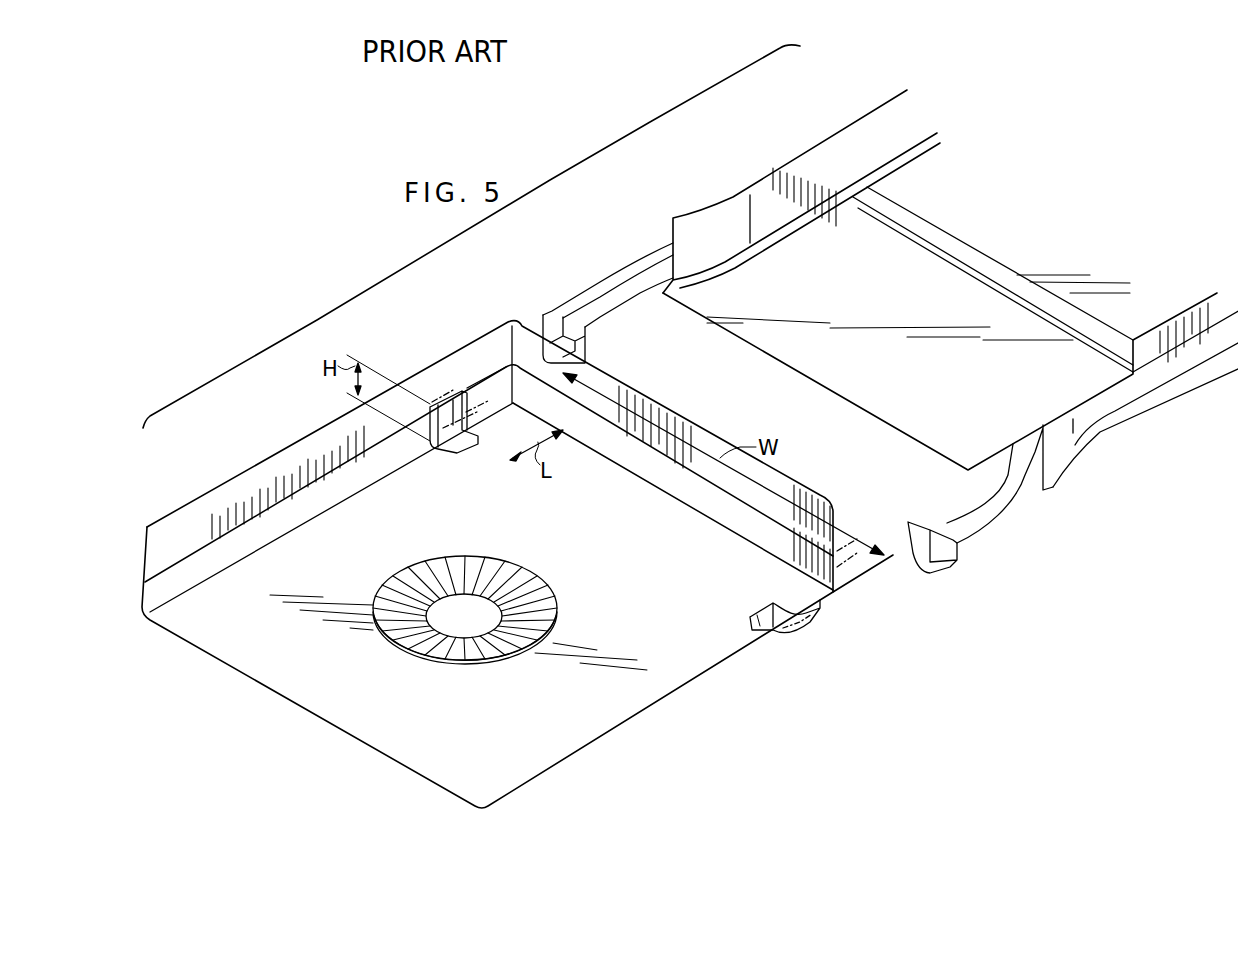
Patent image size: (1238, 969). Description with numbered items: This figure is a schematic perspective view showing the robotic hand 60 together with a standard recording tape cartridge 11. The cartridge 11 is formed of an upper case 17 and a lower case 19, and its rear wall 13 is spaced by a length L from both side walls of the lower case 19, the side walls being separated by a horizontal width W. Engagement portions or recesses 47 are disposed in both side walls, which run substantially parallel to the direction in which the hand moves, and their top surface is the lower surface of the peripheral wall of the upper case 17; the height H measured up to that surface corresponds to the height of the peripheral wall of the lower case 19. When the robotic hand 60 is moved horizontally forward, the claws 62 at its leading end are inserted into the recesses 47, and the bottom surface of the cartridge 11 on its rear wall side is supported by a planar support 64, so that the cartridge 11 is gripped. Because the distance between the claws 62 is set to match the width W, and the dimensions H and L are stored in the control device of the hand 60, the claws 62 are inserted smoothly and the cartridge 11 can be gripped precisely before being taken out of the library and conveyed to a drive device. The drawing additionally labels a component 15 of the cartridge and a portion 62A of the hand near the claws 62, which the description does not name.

The recording tape cartridge 11 is at (462, 336).
The rear wall 13 is at (647, 457).
The spindle motor flange 15 is at (512, 648).
The upper case 17 is at (288, 465).
The lower case 19 is at (655, 678).
The recesses 47 is at (470, 453).
The robotic hand 60 is at (774, 166).
The claws 62 is at (585, 347).
The arm portions 62A is at (597, 287).
The planar support 64 is at (874, 387).